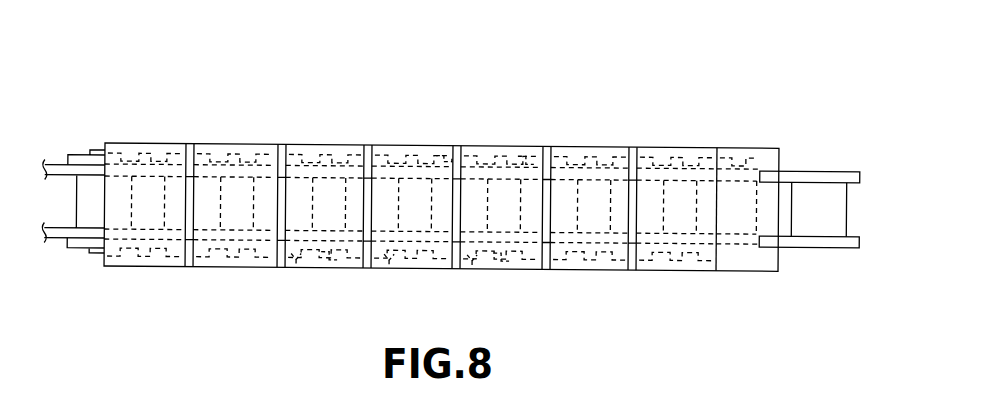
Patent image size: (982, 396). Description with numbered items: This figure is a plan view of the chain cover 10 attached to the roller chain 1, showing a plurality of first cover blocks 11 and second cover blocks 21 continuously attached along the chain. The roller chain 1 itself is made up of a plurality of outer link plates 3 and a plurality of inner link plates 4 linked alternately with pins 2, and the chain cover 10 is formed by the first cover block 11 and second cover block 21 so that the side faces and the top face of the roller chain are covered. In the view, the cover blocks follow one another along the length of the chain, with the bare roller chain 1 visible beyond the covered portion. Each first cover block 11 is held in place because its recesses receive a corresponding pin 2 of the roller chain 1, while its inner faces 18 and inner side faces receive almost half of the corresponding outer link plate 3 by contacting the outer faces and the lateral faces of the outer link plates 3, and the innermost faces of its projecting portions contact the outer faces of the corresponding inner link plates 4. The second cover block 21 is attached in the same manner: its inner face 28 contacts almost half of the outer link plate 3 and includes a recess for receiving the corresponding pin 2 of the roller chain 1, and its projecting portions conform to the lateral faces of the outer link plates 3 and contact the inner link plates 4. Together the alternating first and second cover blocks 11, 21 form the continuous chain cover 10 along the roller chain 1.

The roller chain 1 is at (815, 152).
The pin 2 is at (297, 271).
The outer link plate 3 is at (330, 270).
The inner link plate 4 is at (806, 242).
The chain cover 10 is at (220, 58).
The first cover block 11 is at (326, 142).
The inner face 18 is at (525, 157).
The second cover block 21 is at (239, 142).
The inner face 28 is at (443, 150).